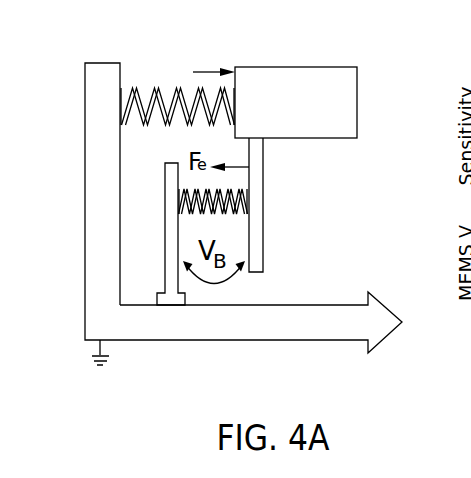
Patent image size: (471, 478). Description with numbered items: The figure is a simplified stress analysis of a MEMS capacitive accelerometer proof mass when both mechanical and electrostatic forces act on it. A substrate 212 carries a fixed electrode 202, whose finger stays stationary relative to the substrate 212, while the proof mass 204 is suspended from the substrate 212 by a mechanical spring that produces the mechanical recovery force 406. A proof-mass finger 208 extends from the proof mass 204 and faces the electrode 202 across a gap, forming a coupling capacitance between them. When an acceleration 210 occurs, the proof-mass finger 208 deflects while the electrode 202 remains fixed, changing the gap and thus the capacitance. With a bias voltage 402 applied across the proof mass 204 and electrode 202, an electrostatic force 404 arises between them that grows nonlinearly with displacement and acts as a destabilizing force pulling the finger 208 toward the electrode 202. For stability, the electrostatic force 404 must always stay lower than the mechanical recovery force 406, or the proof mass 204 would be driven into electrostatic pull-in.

The fixed electrode 202 is at (165, 240).
The proof mass 204 is at (318, 67).
The proof-mass finger 208 is at (263, 180).
The acceleration 210 is at (315, 342).
The substrate 212 is at (85, 97).
The bias voltage 402 is at (217, 239).
The electrostatic force 404 is at (199, 151).
The mechanical recovery force 406 is at (183, 58).